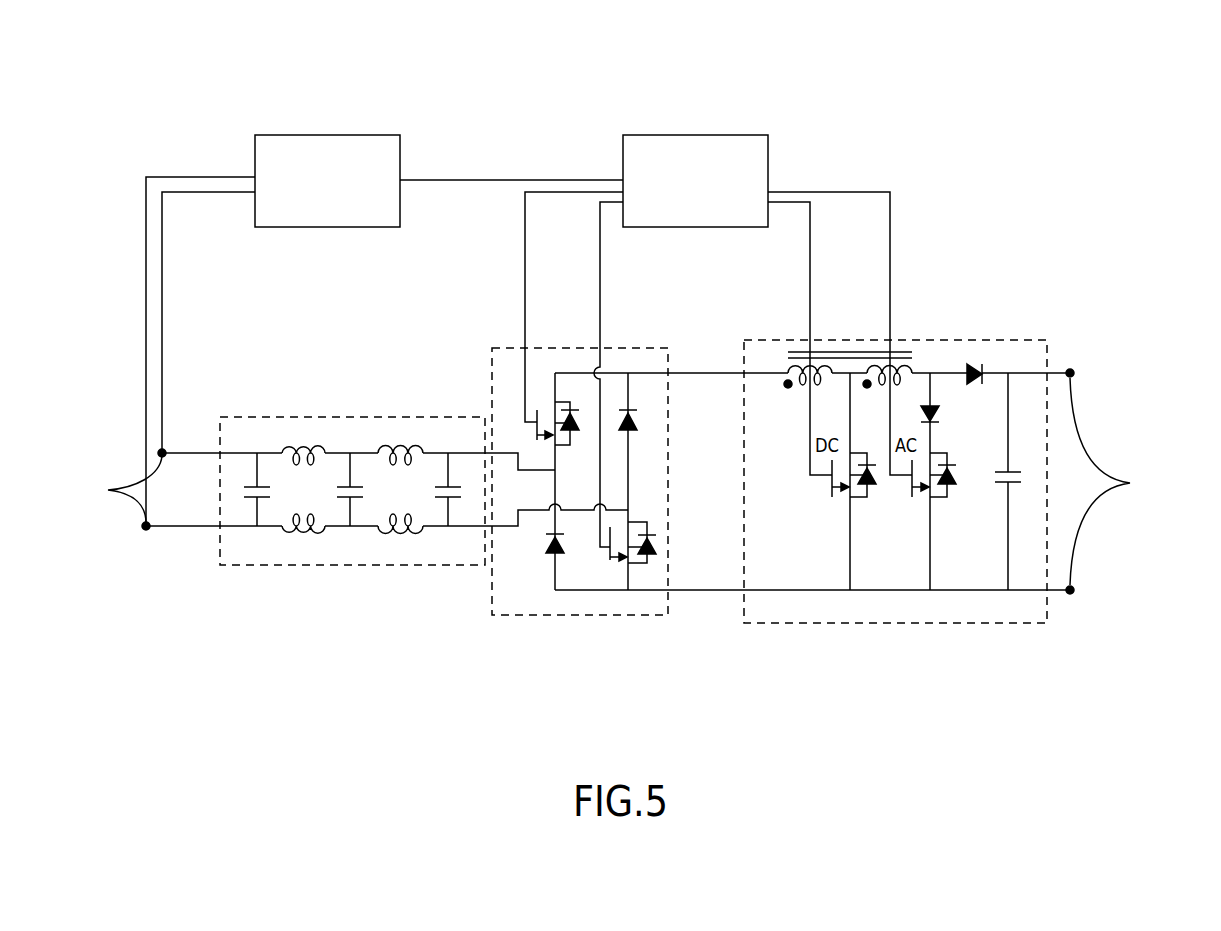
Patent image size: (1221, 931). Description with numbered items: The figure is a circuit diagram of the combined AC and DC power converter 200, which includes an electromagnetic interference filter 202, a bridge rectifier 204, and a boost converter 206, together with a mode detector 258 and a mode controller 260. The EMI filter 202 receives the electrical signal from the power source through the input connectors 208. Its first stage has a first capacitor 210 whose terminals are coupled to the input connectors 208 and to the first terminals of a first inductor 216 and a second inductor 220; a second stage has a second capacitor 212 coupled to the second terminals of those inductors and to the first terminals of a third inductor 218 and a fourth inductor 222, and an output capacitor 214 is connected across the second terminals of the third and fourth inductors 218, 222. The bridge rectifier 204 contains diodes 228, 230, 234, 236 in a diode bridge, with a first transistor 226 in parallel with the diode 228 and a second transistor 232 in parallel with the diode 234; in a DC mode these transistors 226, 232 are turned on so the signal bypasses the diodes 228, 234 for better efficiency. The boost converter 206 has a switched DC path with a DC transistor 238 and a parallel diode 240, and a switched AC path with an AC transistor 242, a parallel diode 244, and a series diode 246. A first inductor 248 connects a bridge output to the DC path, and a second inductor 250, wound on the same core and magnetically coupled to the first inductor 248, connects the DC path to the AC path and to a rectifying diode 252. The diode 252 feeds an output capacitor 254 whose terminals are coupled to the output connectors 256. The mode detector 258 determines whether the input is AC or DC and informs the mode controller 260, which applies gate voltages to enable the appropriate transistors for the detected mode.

The combined AC and DC power converter 200 is at (192, 100).
The electromagnetic interference (EMI) filter 202 is at (241, 416).
The bridge rectifier 204 is at (508, 347).
The boost converter 206 is at (750, 344).
The input connectors 208 is at (109, 491).
The first capacitor 210 is at (255, 486).
The second capacitor 212 is at (348, 499).
The output capacitor 214 is at (447, 499).
The first inductor 216 is at (304, 442).
The third inductor 218 is at (400, 442).
The second inductor 220 is at (303, 538).
The fourth inductor 222 is at (400, 538).
The first transistor 226 is at (535, 420).
The diode 228 is at (578, 428).
The diode 230 is at (553, 556).
The second transistor 232 is at (608, 557).
The diode 234 is at (647, 556).
The diode 236 is at (636, 428).
The DC transistor 238 is at (830, 488).
The diode 240 is at (868, 486).
The AC transistor 242 is at (912, 494).
The diode 244 is at (948, 486).
The diode 246 is at (932, 404).
The first inductor 248 is at (808, 362).
The second inductor 250 is at (888, 362).
The diode 252 is at (975, 366).
The output capacitor 254 is at (1010, 485).
The output connectors 256 is at (1130, 483).
The mode detector 258 is at (290, 159).
The mode controller 260 is at (658, 159).